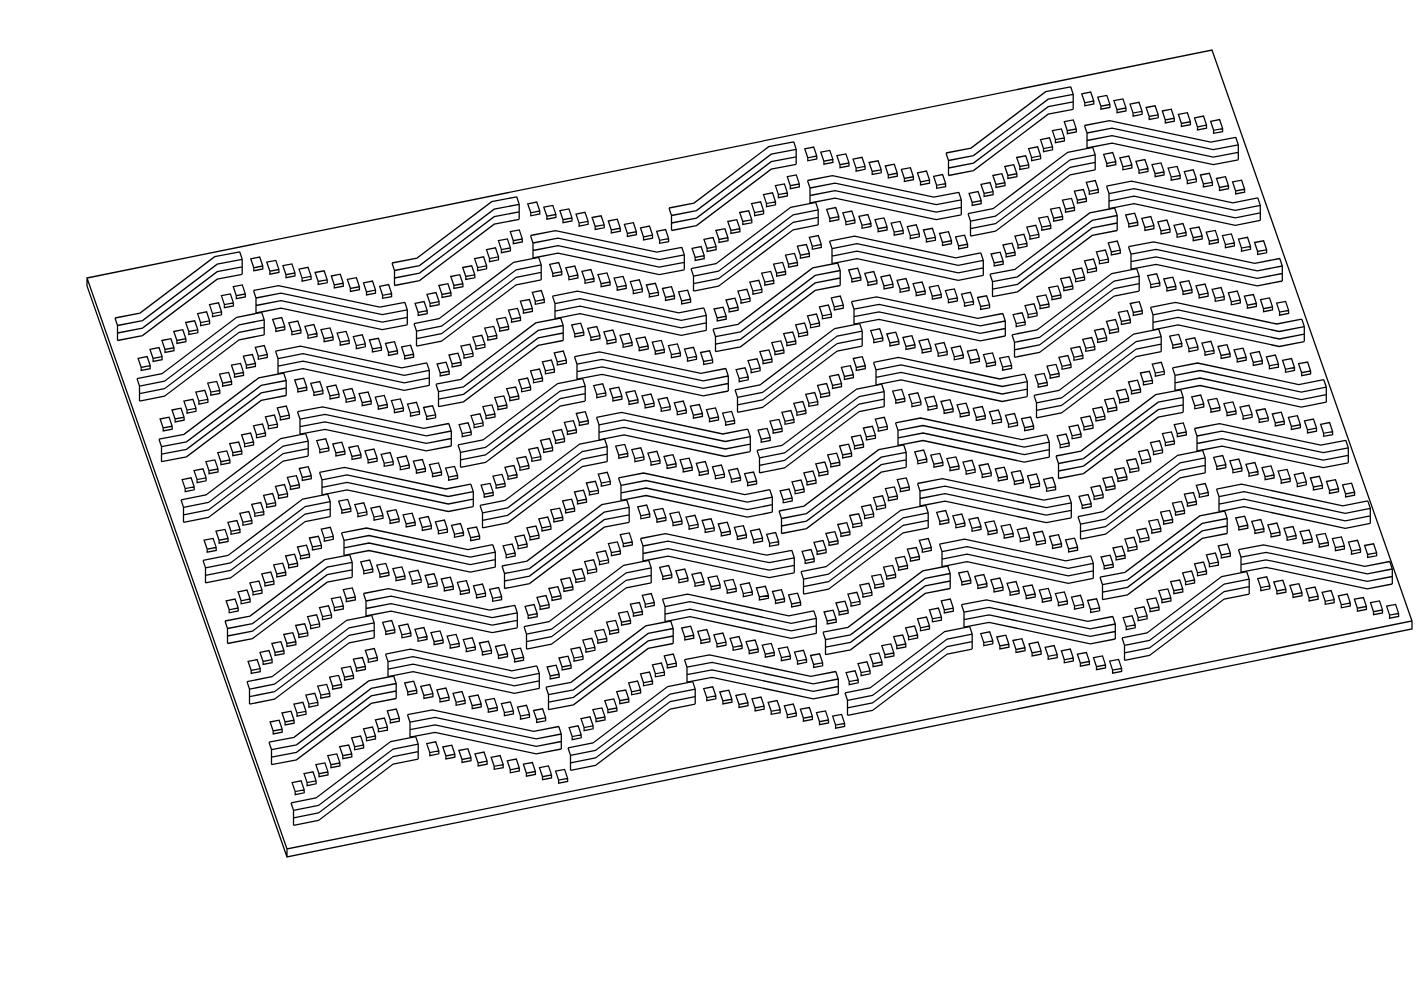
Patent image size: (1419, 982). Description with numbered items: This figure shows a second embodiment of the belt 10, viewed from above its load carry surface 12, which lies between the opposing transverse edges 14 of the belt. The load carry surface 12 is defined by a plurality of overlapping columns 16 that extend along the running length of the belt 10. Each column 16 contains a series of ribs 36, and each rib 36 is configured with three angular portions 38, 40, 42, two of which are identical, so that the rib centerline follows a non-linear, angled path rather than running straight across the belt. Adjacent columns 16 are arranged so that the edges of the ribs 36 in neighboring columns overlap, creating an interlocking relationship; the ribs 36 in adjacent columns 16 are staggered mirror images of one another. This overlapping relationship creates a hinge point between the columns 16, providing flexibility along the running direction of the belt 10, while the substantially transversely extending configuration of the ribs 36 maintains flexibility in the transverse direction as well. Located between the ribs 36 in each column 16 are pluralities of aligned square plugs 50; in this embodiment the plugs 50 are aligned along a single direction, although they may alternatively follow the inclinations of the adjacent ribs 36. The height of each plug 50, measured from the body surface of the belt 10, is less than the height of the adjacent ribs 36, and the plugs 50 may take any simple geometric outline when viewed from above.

The belt 10 is at (1268, 106).
The load carry surface 12 is at (666, 187).
The transverse edges 14 is at (1291, 290).
The columns 16 is at (173, 247).
The ribs 36 is at (598, 226).
The angular portion 38 is at (578, 754).
The angular portion 40 is at (621, 738).
The angular portion 42 is at (681, 703).
The square plugs 50 is at (1231, 237).